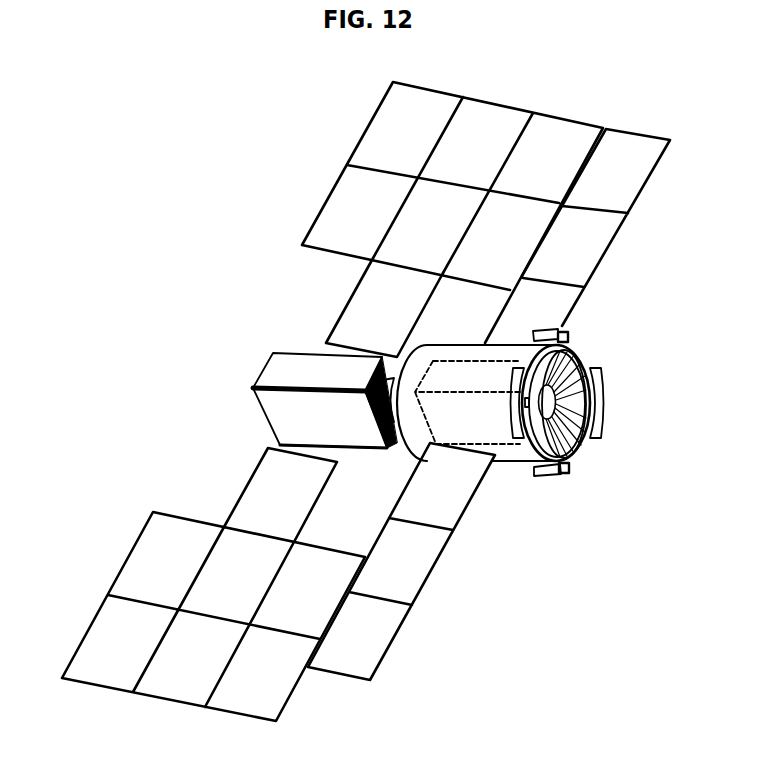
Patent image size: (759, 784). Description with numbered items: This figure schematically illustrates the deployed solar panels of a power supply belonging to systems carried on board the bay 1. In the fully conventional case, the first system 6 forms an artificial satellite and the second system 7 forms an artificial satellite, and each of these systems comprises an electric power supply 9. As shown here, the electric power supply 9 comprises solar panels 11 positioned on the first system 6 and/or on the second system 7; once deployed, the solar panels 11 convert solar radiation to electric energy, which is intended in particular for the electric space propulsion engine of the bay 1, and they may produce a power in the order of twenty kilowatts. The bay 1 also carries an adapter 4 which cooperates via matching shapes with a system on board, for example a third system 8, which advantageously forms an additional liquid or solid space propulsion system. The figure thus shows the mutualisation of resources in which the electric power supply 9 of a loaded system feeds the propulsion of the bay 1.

The bay 1 is at (586, 341).
The adapter 4 is at (395, 416).
The first system 6 is at (478, 424).
The second system 7 is at (293, 370).
The third system 8 is at (548, 402).
The electric power supply 9 is at (321, 309).
The solar panels 11 is at (311, 183).